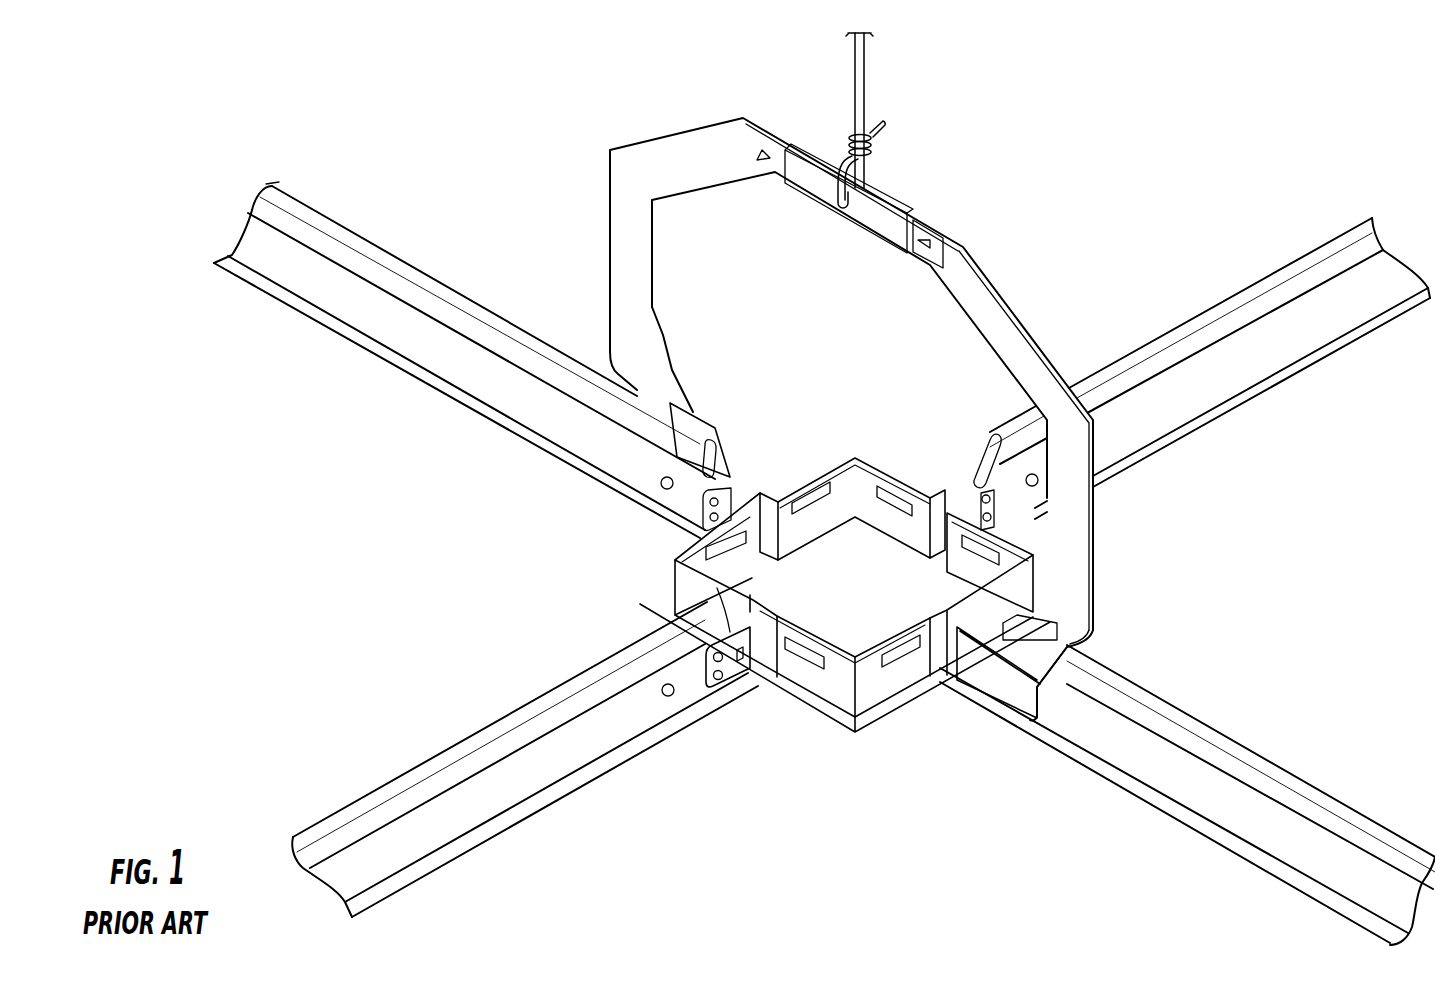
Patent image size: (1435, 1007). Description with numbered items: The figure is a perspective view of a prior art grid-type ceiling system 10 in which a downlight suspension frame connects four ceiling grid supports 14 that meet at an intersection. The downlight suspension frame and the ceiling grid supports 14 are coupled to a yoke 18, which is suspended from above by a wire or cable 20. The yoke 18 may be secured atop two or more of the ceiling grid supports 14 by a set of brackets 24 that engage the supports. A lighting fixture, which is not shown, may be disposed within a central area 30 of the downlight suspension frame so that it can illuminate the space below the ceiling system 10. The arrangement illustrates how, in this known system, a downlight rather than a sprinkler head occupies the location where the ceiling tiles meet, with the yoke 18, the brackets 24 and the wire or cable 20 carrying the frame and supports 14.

The ceiling system 10 is at (500, 115).
The ceiling grid supports 14 is at (1210, 309).
The yoke 18 is at (987, 275).
The wire or cable 20 is at (866, 92).
The brackets 24 is at (655, 430).
The central area 30 is at (840, 572).